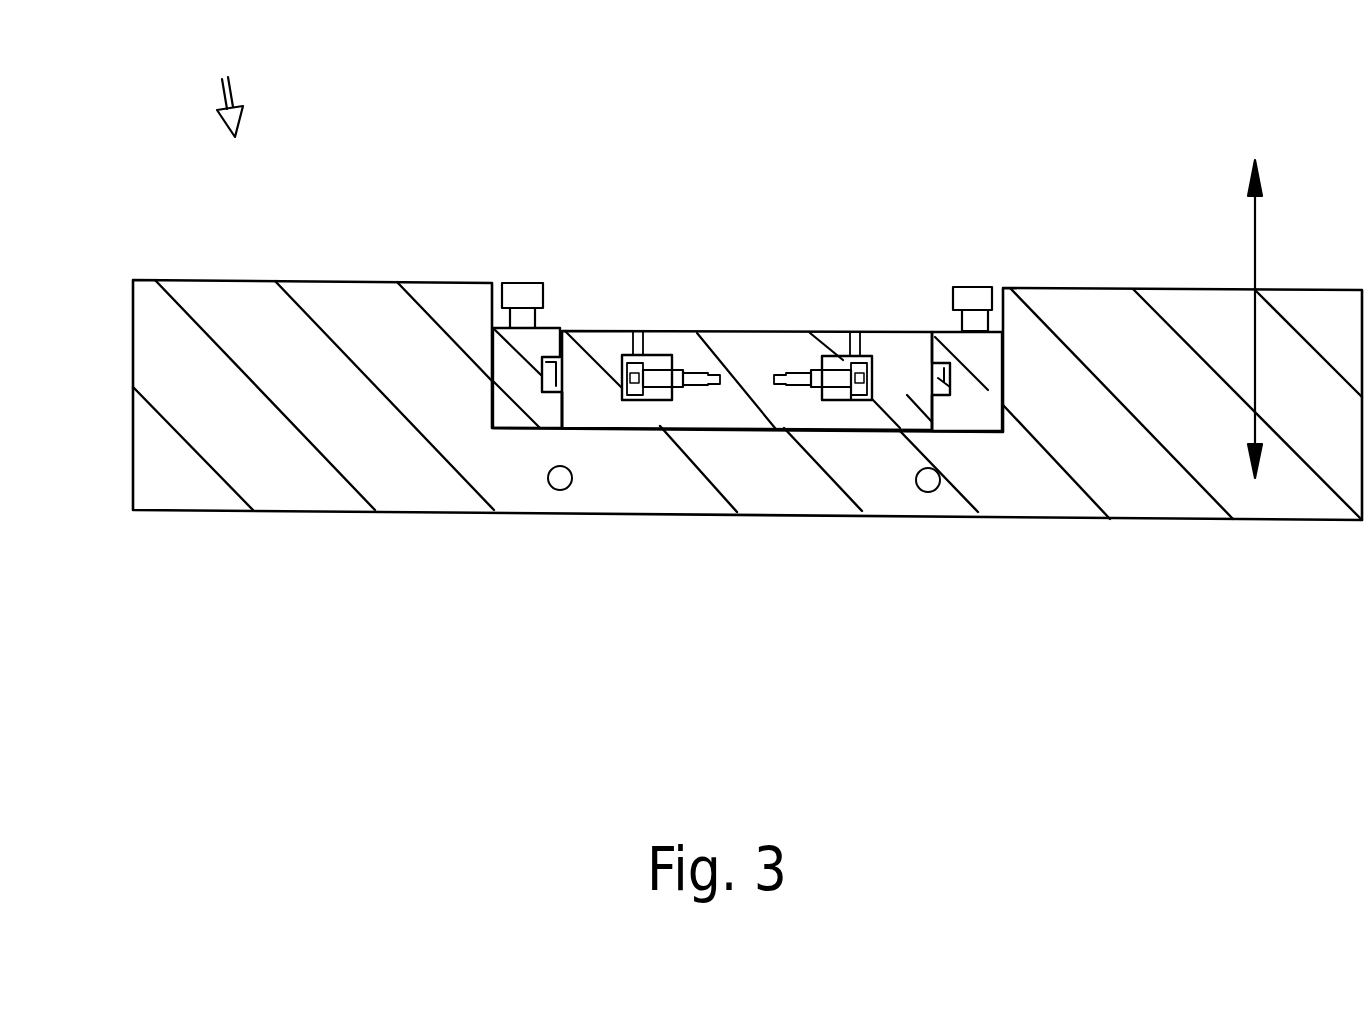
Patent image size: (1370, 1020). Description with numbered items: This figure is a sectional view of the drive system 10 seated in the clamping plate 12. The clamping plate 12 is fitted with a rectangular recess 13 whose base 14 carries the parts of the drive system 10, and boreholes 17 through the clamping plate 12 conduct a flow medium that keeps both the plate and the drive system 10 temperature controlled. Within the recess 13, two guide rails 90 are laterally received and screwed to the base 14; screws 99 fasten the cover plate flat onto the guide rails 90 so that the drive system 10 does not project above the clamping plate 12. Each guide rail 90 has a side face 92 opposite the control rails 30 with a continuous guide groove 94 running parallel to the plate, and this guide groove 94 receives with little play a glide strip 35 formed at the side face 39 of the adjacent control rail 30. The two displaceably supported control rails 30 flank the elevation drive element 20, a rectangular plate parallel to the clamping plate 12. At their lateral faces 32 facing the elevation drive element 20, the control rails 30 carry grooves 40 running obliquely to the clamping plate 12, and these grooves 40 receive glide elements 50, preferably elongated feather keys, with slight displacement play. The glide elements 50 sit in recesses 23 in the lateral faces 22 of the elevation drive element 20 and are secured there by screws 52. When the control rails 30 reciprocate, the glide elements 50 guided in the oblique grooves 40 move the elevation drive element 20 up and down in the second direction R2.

The drive system 10 is at (222, 79).
The clamping plate 12 is at (190, 490).
The recess 13 is at (601, 290).
The base 14 is at (888, 438).
The boreholes 17 is at (560, 491).
The elevation drive element 20 is at (840, 400).
The lateral faces 22 is at (857, 356).
The recesses 23 is at (822, 397).
The control rails 30 is at (587, 400).
The lateral faces 32 is at (648, 343).
The glide strip 35 is at (552, 375).
The side face 39 is at (563, 407).
The grooves 40 is at (633, 353).
The glide elements 50 is at (822, 402).
The screws 52 is at (683, 370).
The guide rails 90 is at (505, 375).
The side faces 92 is at (505, 526).
The guide groove 94 is at (545, 362).
The screws 99 is at (520, 297).
The second direction R2 is at (1250, 266).